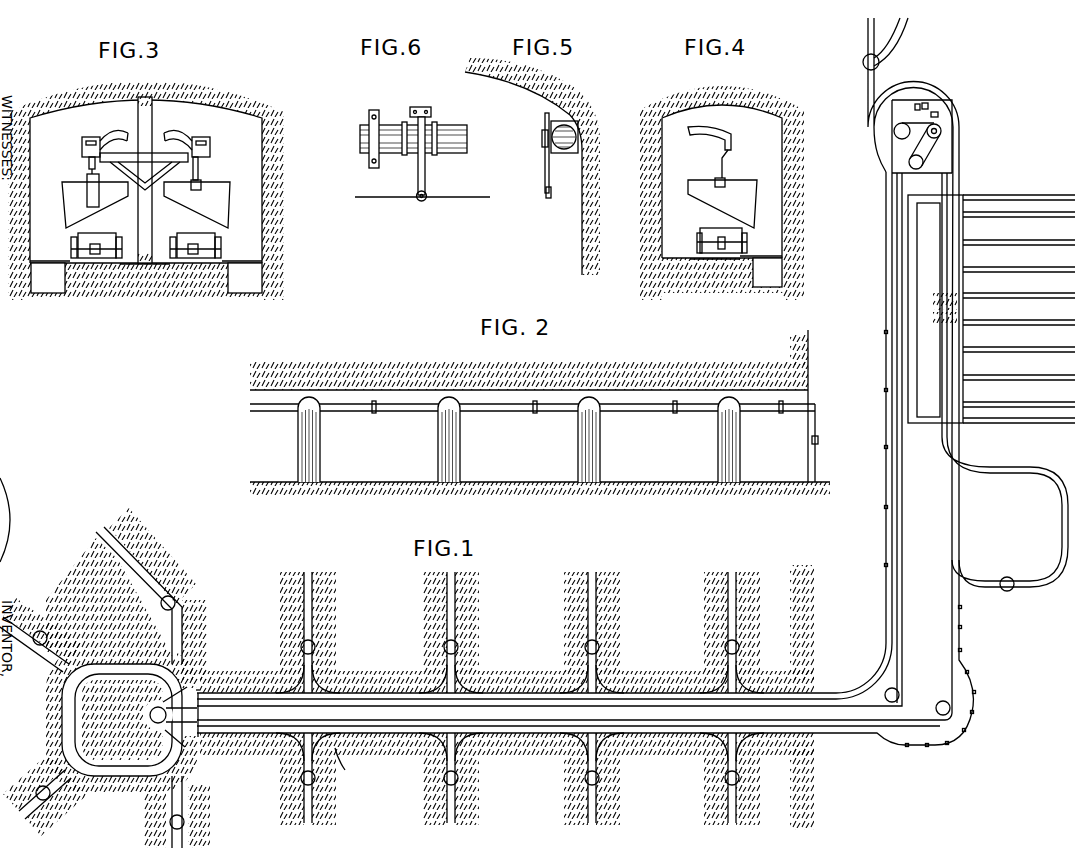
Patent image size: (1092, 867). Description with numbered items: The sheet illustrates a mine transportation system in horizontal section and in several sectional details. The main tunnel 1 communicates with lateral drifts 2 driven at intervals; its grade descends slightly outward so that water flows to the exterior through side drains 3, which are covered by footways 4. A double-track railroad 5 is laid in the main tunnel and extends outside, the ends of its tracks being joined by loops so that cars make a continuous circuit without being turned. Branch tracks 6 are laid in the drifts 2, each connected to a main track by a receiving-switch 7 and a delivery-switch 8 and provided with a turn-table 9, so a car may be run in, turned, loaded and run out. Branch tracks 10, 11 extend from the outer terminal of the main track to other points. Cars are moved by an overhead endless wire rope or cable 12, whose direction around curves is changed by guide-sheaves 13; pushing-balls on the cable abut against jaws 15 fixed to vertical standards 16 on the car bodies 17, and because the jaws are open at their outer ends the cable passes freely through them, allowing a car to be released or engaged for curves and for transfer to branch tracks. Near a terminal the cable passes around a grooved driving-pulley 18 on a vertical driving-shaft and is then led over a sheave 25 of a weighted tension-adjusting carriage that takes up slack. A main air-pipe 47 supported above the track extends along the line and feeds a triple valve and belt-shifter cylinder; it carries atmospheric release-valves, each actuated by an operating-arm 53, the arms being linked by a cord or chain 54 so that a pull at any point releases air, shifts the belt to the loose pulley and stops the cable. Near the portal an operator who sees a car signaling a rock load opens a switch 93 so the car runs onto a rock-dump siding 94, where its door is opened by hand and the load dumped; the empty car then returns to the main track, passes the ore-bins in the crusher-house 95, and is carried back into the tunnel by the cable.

In FIG. 3, the main tunnel 1 is at (146, 181).
In FIG. 2, the main tunnel 1 is at (540, 406).
In FIG. 1, the main tunnel 1 is at (530, 712).
In FIG. 5, the lateral drifts 2 is at (523, 173).
In FIG. 4, the lateral drifts 2 is at (722, 181).
In FIG. 2, the lateral drifts 2 is at (519, 439).
In FIG. 1, the lateral drifts 2 is at (727, 798).
In FIG. 3, the side drains 3 is at (146, 278).
In FIG. 4, the side drains 3 is at (767, 272).
In FIG. 3, the footways 4 is at (146, 250).
In FIG. 4, the footways 4 is at (761, 245).
In FIG. 3, the double-track railroad 5 is at (122, 265).
In FIG. 1, the double-track railroad 5 is at (947, 640).
In FIG. 4, the branch tracks 6 is at (705, 260).
In FIG. 1, the branch tracks 6 is at (598, 808).
In FIG. 1, the receiving-switch 7 is at (325, 686).
In FIG. 1, the delivery-switch 8 is at (475, 748).
In FIG. 1, the turn-table 9 is at (465, 793).
In FIG. 1, the branch track 10 is at (897, 227).
In FIG. 1, the branch track 11 is at (896, 42).
In FIG. 1, the endless wire rope or cable 12 is at (122, 687).
In FIG. 1, the guide-sheaves 13 is at (200, 685).
In FIG. 3, the jaws 15 is at (182, 138).
In FIG. 4, the jaws 15 is at (713, 128).
In FIG. 3, the vertical standards 16 is at (201, 169).
In FIG. 4, the vertical standards 16 is at (718, 168).
In FIG. 3, the car bodies 17 is at (146, 205).
In FIG. 4, the car bodies 17 is at (722, 204).
In FIG. 1, the grooved driving-pulley 18 is at (941, 128).
In FIG. 1, the tension sheave 25 is at (925, 164).
In FIG. 5, the main air-pipe 47 is at (549, 158).
In FIG. 2, the main air-pipe 47 is at (340, 406).
In FIG. 1, the main air-pipe 47 is at (345, 770).
In FIG. 6, the operating-arm 53 is at (435, 154).
In FIG. 5, the operating-arm 53 is at (546, 190).
In FIG. 2, the operating-arm 53 is at (670, 405).
In FIG. 6, the cord or chain 54 is at (422, 207).
In FIG. 2, the cord or chain 54 is at (618, 410).
In FIG. 1, the switch 93 is at (961, 596).
In FIG. 1, the rock-dump siding 94 is at (1005, 512).
In FIG. 1, the crusher-house 95 is at (991, 321).